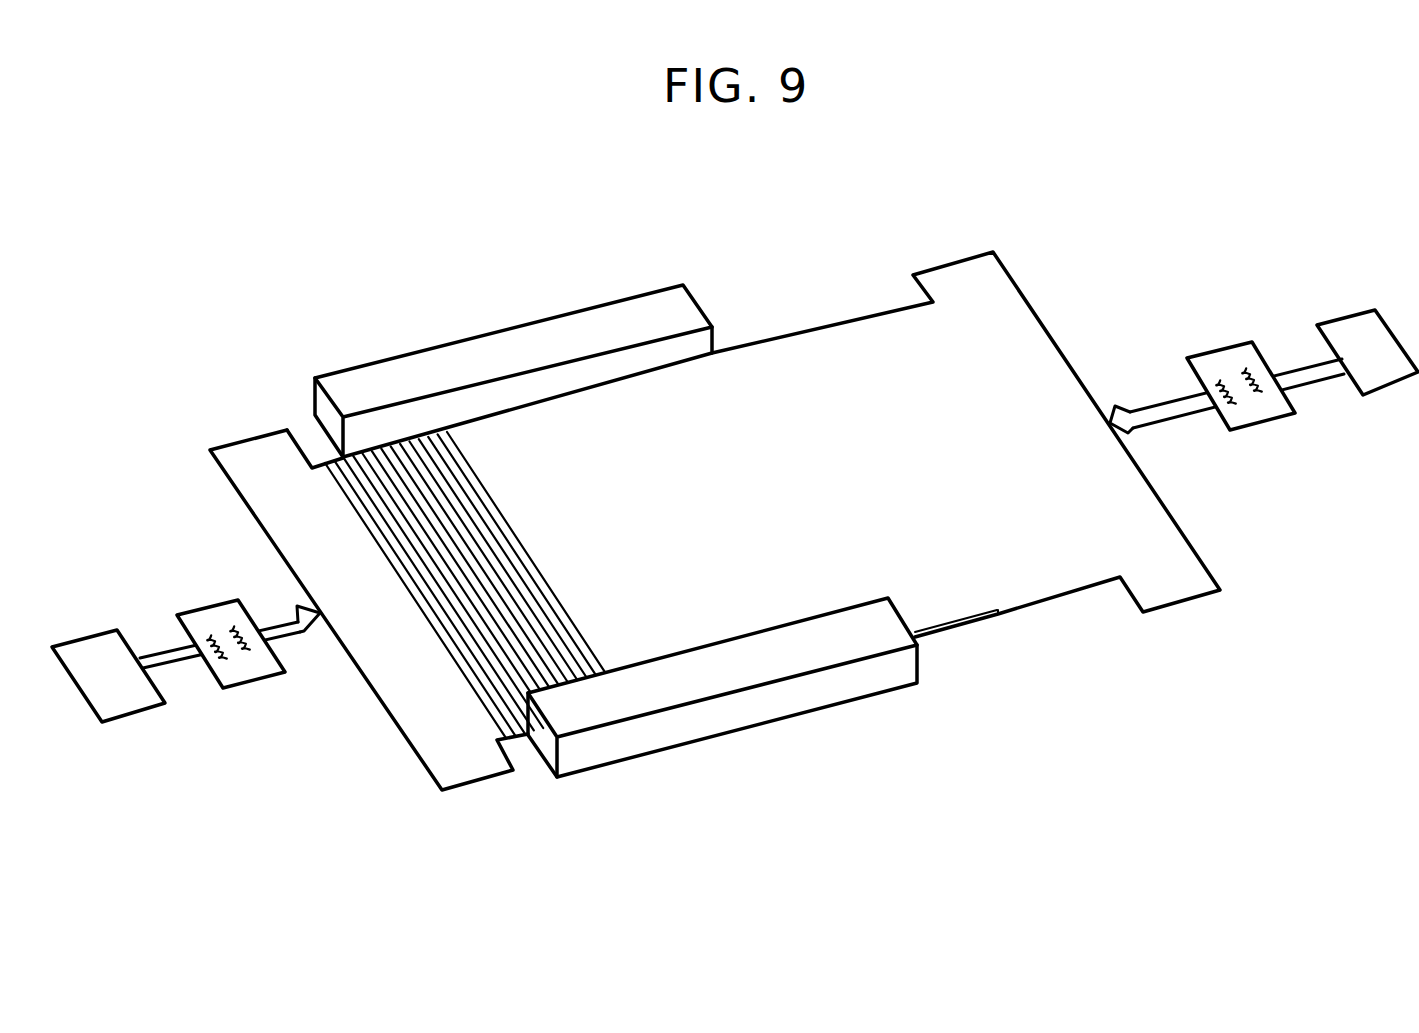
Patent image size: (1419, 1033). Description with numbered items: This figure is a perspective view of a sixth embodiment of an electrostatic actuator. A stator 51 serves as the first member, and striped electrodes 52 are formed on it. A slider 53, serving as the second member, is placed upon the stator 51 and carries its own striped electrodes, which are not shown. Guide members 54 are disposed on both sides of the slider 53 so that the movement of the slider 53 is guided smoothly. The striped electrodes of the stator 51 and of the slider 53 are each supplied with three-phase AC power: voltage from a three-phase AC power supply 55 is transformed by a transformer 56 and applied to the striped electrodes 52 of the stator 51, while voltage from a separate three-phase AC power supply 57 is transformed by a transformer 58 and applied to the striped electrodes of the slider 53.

The stator 51 is at (367, 683).
The striped electrodes 52 is at (497, 717).
The slider 53 is at (872, 313).
The guide members 54 is at (585, 305).
The three-phase AC power supply 55 is at (140, 715).
The transformer 56 is at (252, 683).
The three-phase AC power supply 57 is at (1387, 393).
The transformer 58 is at (1263, 427).